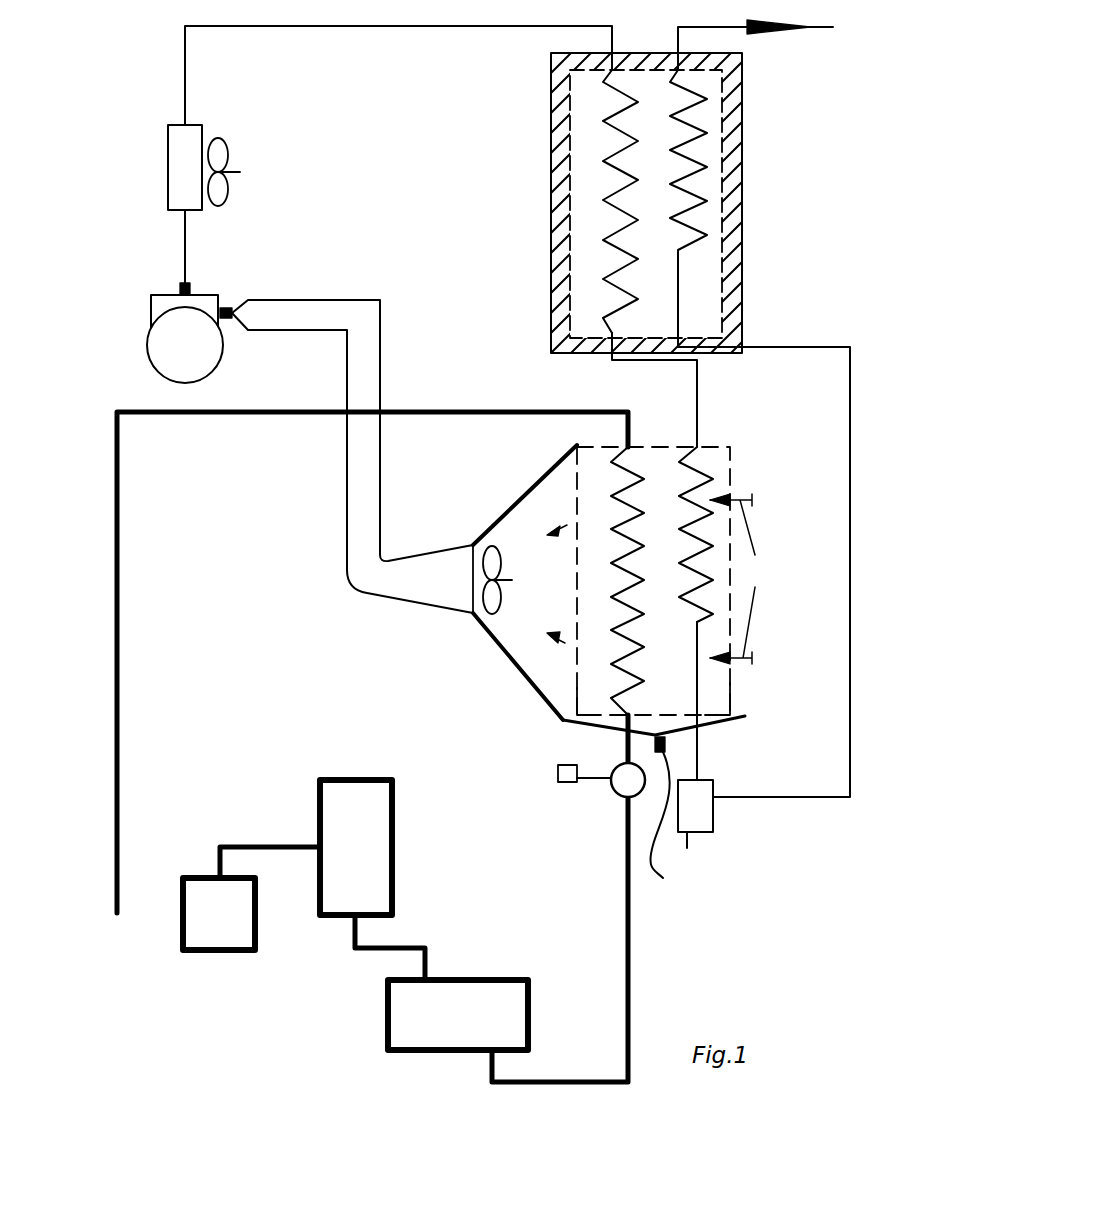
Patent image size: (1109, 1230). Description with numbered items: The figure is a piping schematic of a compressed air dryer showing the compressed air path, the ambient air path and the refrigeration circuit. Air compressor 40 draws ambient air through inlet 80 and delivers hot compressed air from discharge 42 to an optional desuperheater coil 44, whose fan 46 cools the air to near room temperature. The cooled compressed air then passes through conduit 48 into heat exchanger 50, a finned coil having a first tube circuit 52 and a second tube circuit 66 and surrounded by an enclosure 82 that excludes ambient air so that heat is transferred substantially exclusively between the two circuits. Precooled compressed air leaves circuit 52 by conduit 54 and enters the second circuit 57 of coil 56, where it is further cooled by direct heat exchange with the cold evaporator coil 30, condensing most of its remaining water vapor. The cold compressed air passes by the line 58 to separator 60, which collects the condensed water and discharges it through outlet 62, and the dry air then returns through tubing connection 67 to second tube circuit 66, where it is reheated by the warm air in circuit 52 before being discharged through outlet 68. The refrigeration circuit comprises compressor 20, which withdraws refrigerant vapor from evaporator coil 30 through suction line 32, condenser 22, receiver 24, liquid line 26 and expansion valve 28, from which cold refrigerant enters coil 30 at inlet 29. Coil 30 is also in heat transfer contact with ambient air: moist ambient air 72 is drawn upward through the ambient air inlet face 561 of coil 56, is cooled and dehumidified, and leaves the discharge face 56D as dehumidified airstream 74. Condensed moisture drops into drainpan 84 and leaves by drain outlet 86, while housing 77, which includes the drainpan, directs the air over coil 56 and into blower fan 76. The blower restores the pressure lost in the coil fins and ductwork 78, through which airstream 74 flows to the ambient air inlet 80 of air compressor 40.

The compressor 20 is at (197, 877).
The condenser 22 is at (318, 818).
The receiver 24 is at (462, 980).
The liquid line 26 is at (625, 885).
The expansion valve 28 is at (606, 792).
The inlet 29 is at (620, 737).
The evaporator coil 30 is at (633, 473).
The suction line 32 is at (120, 700).
The air compressor 40 is at (212, 292).
The compressed air discharge 42 is at (185, 250).
The desuperheater coil 44 is at (200, 210).
The fan 46 is at (228, 148).
The conduit 48 is at (460, 28).
The heat exchanger 50 is at (550, 236).
The first tube circuit 52 is at (632, 133).
The conduit 54 is at (698, 400).
The coil 56 is at (578, 508).
The ambient air discharge face 56D is at (573, 690).
The ambient air inlet face 561 is at (728, 672).
The second circuit 57 is at (703, 470).
The liquid line 58 is at (698, 686).
The separator 60 is at (713, 785).
The outlet conduit 62 is at (690, 845).
The second tube circuit 66 is at (687, 117).
The tubing connection 67 is at (825, 345).
The outlet 68 is at (762, 45).
The moist ambient air 72 is at (739, 579).
The dehumidified airstream 74 is at (577, 647).
The blower fan 76 is at (482, 610).
The housing 77 is at (503, 513).
The ductwork 78 is at (345, 538).
The ambient air inlet 80 is at (224, 318).
The enclosure 82 is at (549, 183).
The drainpan 84 is at (600, 727).
The drain outlet 86 is at (674, 826).